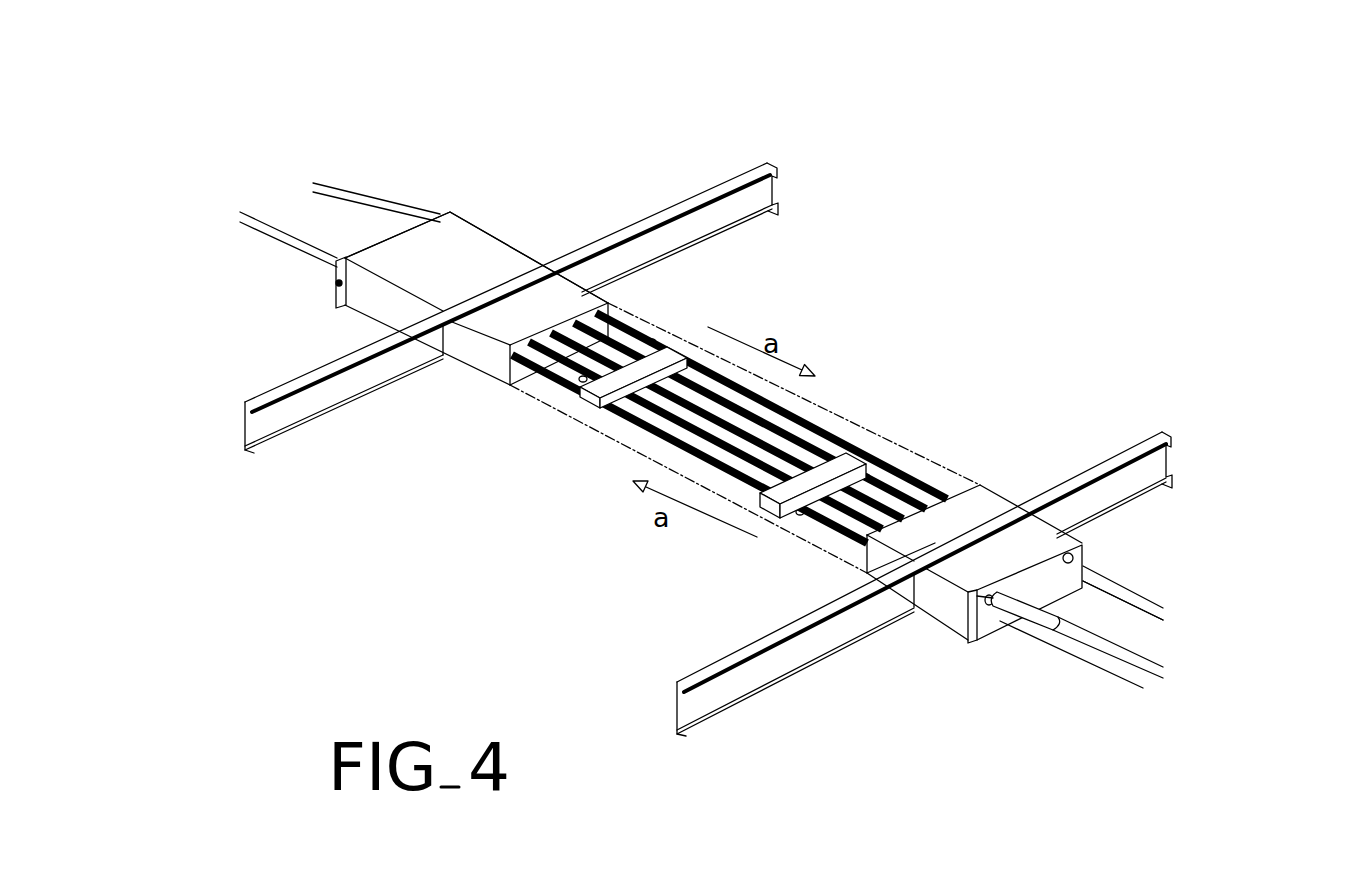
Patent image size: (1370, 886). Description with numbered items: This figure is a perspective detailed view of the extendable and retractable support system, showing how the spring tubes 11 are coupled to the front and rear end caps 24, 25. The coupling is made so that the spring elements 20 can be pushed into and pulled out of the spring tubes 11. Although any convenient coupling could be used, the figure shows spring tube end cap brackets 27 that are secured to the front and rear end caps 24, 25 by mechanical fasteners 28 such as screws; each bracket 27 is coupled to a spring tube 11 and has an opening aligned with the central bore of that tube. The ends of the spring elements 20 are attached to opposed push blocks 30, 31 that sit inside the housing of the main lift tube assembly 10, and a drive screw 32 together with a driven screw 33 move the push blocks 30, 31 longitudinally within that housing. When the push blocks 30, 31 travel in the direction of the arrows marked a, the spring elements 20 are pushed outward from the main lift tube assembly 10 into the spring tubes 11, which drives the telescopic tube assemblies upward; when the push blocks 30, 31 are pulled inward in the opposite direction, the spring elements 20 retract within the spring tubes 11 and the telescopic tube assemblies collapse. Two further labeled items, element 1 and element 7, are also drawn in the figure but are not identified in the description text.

The cable guide assembly 1 is at (1105, 588).
The rail 7 is at (747, 200).
The main lift tube assembly 10 is at (420, 278).
The spring tube 11 is at (342, 190).
The spring element 20 is at (618, 348).
The front end cap 24 is at (450, 212).
The rear end cap 25 is at (1078, 538).
The spring tube end cap bracket 27 is at (335, 288).
The mechanical fastener 28 is at (337, 283).
The push block 30 is at (588, 397).
The push block 31 is at (778, 507).
The drive screw 32 is at (565, 374).
The driven screw 33 is at (884, 494).